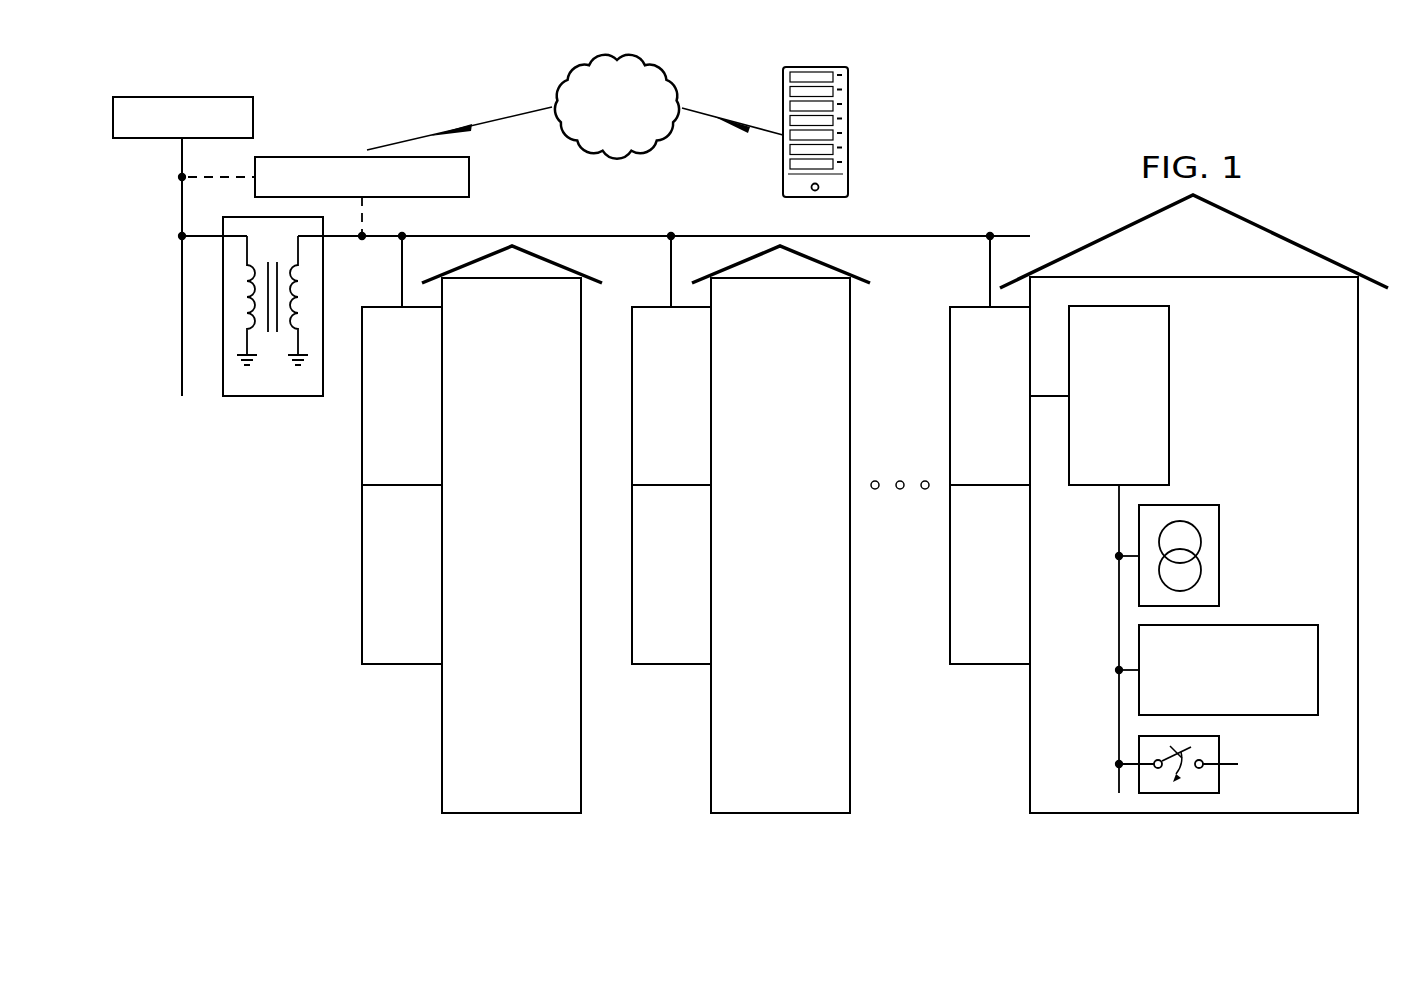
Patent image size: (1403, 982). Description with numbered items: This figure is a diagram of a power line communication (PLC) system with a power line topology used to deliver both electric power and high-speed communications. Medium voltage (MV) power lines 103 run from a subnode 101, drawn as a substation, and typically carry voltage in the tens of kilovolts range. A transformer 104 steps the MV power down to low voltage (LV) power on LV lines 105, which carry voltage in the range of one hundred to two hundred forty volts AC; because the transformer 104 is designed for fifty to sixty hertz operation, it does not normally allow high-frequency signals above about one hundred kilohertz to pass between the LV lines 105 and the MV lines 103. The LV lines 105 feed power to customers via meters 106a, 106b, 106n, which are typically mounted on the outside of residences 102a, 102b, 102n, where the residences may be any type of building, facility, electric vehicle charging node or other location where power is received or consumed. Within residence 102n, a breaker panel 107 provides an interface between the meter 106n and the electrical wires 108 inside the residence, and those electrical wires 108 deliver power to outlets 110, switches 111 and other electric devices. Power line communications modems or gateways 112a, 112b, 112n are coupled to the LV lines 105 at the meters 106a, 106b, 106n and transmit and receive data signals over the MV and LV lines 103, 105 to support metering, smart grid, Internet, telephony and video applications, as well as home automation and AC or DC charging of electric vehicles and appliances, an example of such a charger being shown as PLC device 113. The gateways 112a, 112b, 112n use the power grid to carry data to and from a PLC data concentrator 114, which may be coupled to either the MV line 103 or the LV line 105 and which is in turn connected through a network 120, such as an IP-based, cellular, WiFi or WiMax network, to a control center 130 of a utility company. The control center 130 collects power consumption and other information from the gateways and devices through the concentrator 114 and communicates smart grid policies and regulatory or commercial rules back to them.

The subnode 101 is at (172, 97).
The medium voltage power lines 103 is at (182, 207).
The transformer 104 is at (262, 397).
The low voltage power lines 105 is at (898, 237).
The meter 106a is at (372, 313).
The meter 106b is at (644, 313).
The meter 106n is at (959, 313).
The residence 102a is at (486, 560).
The residence 102b is at (754, 560).
The residence 102n is at (1262, 448).
The breaker panel 107 is at (1170, 377).
The electrical wires 108 is at (1119, 595).
The outlets 110 is at (1219, 565).
The switches 111 is at (1219, 775).
The power line communications gateway 112a is at (382, 658).
The power line communications gateway 112b is at (650, 658).
The power line communications gateway 112n is at (968, 658).
The PLC device 113 is at (1278, 715).
The PLC data concentrator 114 is at (333, 157).
The network 120 is at (552, 95).
The control center 130 is at (848, 132).